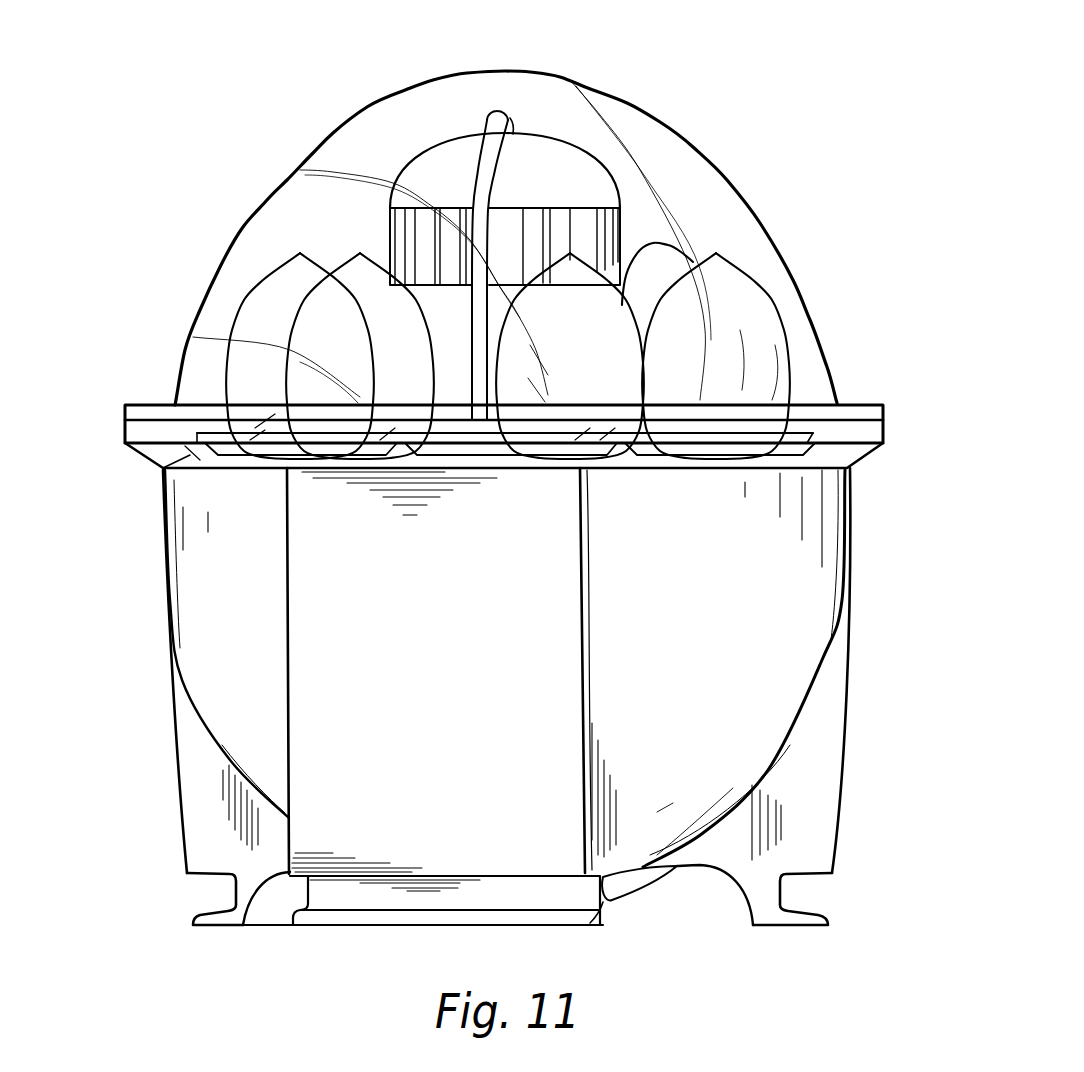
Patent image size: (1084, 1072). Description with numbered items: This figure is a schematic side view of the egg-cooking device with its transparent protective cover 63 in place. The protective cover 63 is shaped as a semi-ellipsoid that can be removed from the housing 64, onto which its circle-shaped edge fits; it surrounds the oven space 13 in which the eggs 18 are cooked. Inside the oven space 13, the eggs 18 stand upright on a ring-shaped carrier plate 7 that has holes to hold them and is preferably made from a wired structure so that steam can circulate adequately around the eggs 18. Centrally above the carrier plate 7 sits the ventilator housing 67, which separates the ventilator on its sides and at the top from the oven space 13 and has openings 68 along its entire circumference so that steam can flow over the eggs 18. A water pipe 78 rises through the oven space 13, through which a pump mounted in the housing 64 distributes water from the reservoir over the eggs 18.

The carrier plate 7 is at (783, 460).
The oven space 13 is at (358, 230).
The eggs 18 is at (730, 337).
The protective cover 63 is at (288, 207).
The housing 64 is at (152, 735).
The ventilator housing 67 is at (560, 170).
The openings 68 is at (580, 237).
The water pipe 78 is at (483, 160).